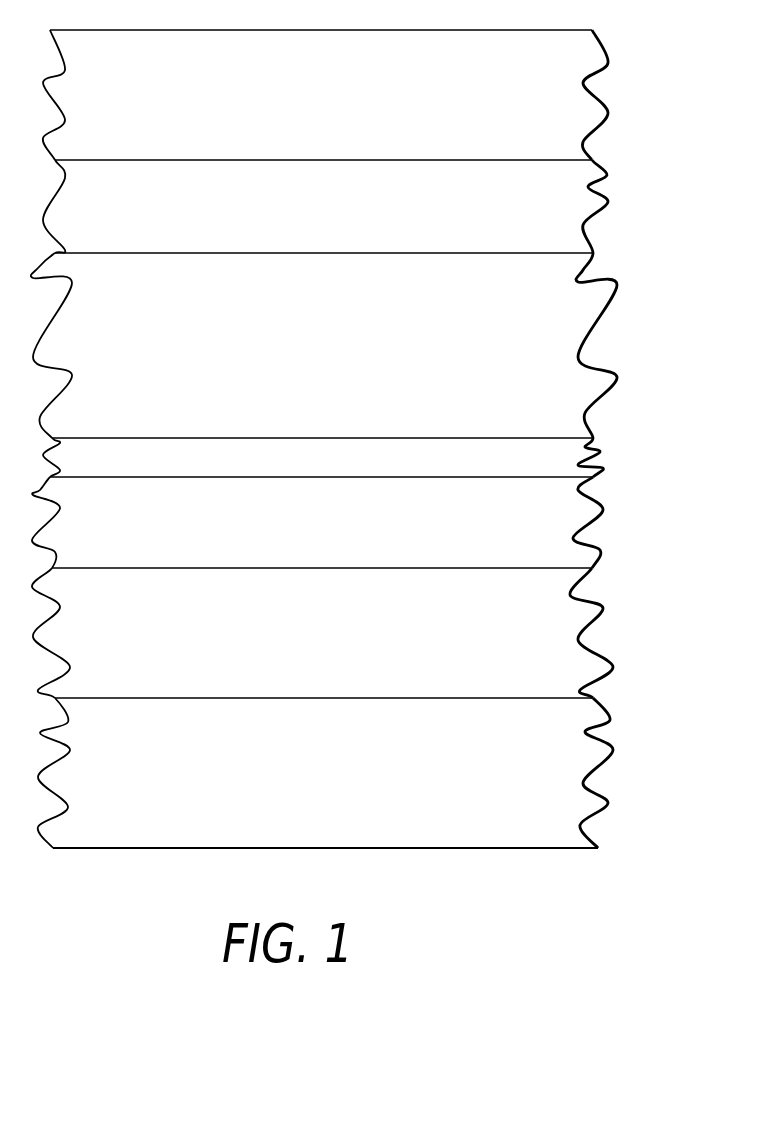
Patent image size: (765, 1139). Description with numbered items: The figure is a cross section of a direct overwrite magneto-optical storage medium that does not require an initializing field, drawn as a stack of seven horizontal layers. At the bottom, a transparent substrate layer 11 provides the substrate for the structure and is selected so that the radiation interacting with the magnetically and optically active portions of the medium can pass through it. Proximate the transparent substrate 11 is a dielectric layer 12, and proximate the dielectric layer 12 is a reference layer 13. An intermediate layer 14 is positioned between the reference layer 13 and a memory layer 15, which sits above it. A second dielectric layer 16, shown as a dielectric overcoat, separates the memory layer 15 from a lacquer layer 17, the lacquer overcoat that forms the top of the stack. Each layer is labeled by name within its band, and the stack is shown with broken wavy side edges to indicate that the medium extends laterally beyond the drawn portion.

The transparent substrate layer 11 is at (598, 792).
The dielectric layer 12 is at (603, 654).
The reference layer 13 is at (592, 542).
The intermediate layer 14 is at (600, 452).
The memory layer 15 is at (602, 366).
The second dielectric layer 16 is at (608, 202).
The lacquer layer 17 is at (600, 108).